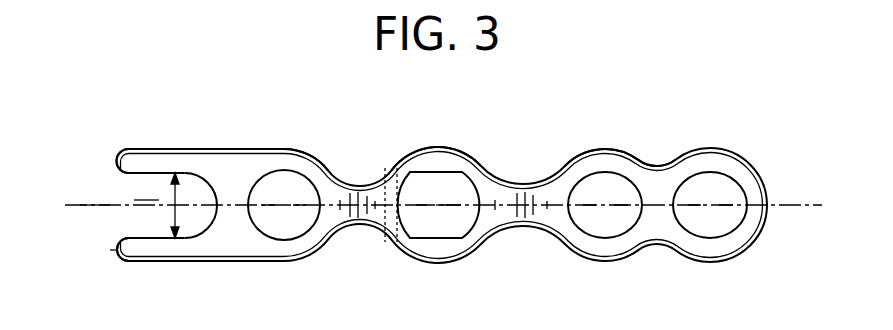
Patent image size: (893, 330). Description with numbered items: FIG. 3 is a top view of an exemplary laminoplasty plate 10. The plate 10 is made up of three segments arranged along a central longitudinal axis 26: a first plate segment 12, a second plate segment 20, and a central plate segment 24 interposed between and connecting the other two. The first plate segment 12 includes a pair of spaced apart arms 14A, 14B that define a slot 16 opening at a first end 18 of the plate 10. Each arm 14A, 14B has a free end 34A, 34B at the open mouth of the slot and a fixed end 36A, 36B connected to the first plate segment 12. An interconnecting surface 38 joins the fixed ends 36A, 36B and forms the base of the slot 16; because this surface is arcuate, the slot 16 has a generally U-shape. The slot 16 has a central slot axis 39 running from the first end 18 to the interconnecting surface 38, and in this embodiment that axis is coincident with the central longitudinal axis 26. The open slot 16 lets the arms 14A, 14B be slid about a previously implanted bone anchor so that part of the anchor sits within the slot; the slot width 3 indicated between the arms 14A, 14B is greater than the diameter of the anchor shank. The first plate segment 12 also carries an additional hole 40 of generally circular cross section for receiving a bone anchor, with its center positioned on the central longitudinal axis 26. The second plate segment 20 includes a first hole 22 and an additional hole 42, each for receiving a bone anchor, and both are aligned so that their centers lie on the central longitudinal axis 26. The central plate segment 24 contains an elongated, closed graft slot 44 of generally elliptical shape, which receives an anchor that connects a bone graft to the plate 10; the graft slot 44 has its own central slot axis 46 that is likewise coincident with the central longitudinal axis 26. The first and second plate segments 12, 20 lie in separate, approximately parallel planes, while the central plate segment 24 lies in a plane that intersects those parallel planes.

The laminoplasty plate 10 is at (450, 130).
The first plate segment 12 is at (263, 151).
The arm 14A is at (158, 262).
The arm 14B is at (147, 149).
The slot 16 is at (146, 189).
The first end 18 is at (115, 250).
The second plate segment 20 is at (628, 152).
The first hole 22 is at (590, 183).
The central plate segment 24 is at (406, 160).
The central longitudinal axis 26 is at (790, 207).
The slot width dimension 3 is at (175, 212).
The free end 34A is at (120, 258).
The free end 34B is at (118, 163).
The fixed end 36A is at (210, 255).
The fixed end 36B is at (200, 157).
The interconnecting surface 38 is at (214, 199).
The central slot axis 39 is at (96, 204).
The additional hole 40 is at (290, 182).
The additional hole 42 is at (710, 185).
The graft slot 44 is at (456, 186).
The central slot axis 46 is at (440, 209).